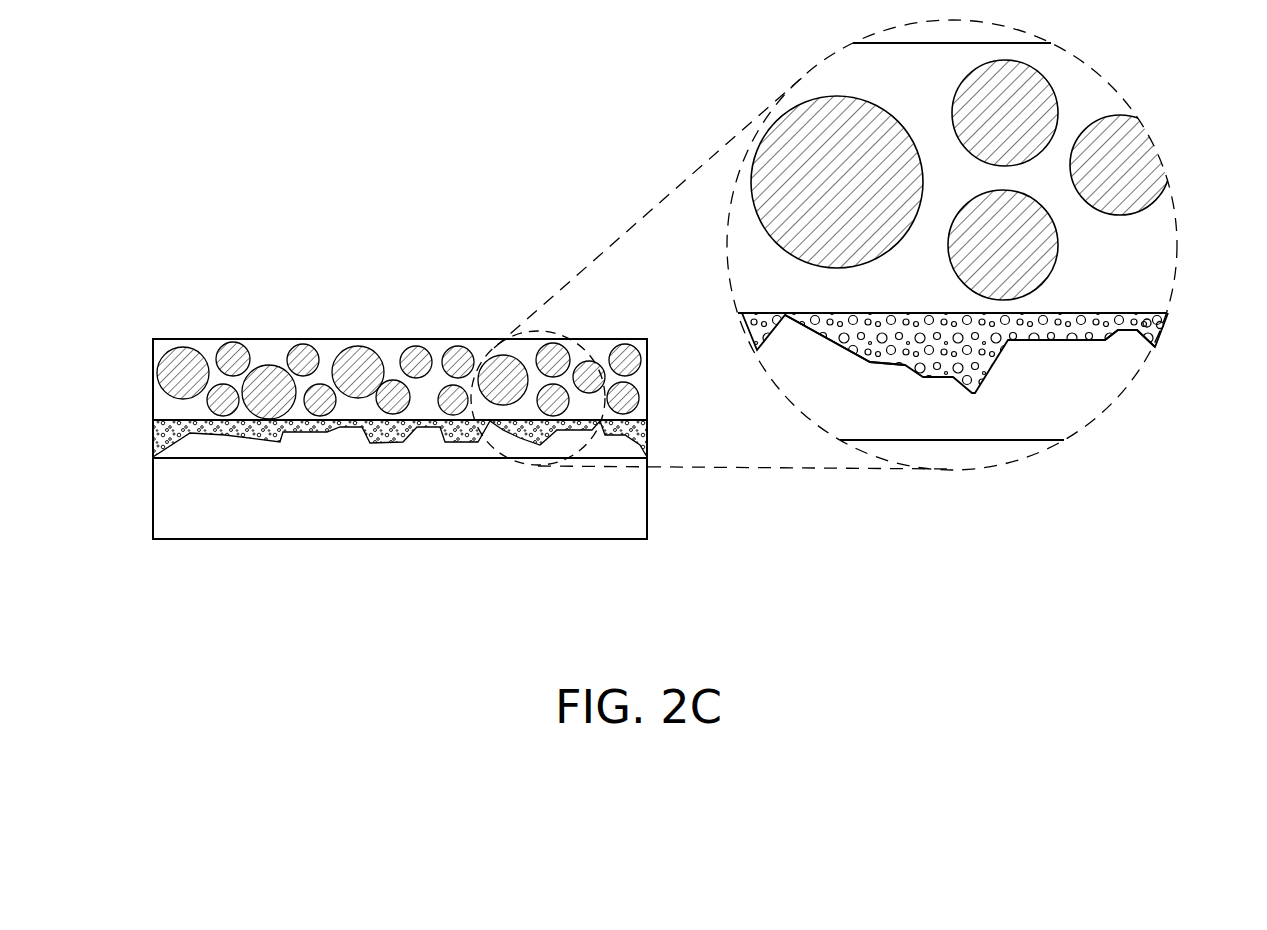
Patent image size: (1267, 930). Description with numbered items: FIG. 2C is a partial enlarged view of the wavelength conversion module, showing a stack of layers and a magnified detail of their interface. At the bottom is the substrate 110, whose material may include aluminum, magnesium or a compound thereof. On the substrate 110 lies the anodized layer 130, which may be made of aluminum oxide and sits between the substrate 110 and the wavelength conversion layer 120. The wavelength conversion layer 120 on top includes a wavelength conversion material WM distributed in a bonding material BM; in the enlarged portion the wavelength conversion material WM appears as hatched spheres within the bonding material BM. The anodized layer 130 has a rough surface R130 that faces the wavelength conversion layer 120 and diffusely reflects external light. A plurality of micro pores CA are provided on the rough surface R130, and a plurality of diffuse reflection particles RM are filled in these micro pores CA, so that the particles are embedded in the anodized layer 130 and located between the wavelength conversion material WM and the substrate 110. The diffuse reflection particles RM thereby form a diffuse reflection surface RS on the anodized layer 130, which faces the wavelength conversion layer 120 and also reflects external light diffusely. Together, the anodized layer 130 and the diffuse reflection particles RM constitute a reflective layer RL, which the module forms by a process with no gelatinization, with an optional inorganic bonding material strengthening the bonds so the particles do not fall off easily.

The substrate 110 is at (180, 516).
The wavelength conversion layer 120 is at (175, 408).
The reflective layer RL is at (150, 420).
The anodized layer 130 is at (1078, 400).
The bonding material BM is at (1083, 74).
The wavelength conversion material WM is at (1033, 113).
The diffuse reflection surface RS is at (1110, 312).
The rough surface R130 is at (1138, 330).
The diffuse reflection particles RM is at (1163, 327).
The micro pores CA is at (857, 333).